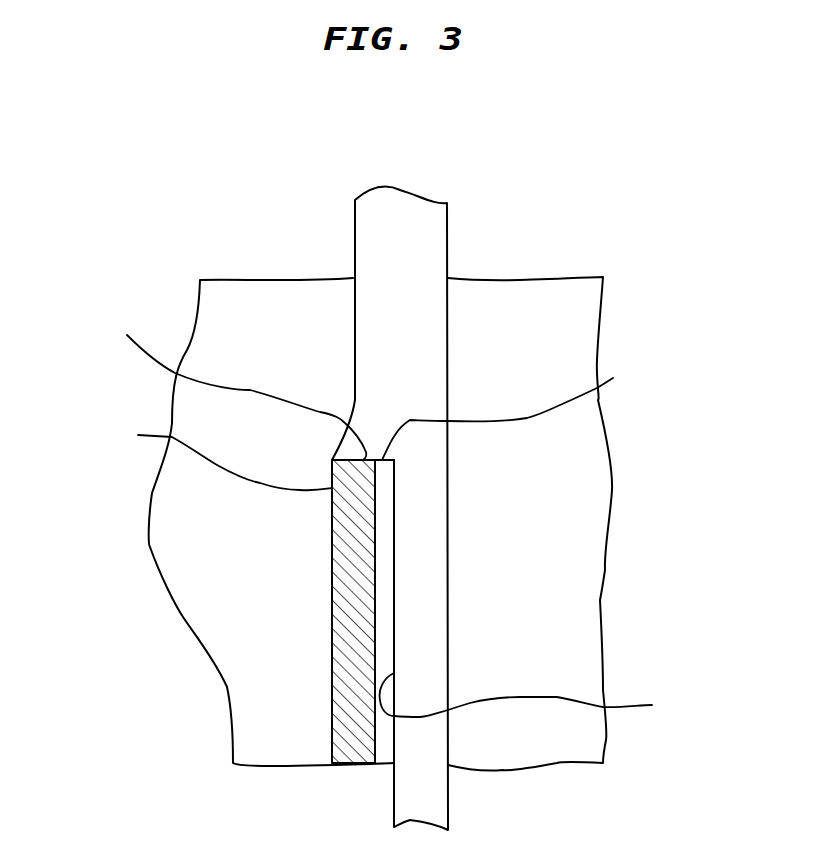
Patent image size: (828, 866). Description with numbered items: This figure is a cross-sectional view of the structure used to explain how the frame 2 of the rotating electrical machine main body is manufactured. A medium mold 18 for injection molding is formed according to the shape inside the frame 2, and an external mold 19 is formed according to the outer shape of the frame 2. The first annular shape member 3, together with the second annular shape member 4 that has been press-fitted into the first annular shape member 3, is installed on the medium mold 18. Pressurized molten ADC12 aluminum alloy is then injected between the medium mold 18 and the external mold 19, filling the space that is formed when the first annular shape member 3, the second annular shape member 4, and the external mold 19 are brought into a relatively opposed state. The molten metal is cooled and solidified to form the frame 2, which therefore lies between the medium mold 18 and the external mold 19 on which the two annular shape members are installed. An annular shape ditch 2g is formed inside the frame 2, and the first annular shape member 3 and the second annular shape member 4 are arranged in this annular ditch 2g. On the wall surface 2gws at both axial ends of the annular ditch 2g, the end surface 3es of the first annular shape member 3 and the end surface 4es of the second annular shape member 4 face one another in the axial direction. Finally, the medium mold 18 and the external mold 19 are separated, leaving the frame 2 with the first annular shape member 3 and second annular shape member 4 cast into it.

The frame 2 is at (433, 665).
The annular shape ditch 2g is at (540, 696).
The wall surface 2gws is at (186, 456).
The first annular shape member 3 is at (385, 565).
The end surface 3es is at (532, 406).
The second annular shape member 4 is at (343, 557).
The end surface 4es is at (216, 381).
The medium mold 18 is at (272, 293).
The external mold 19 is at (532, 290).